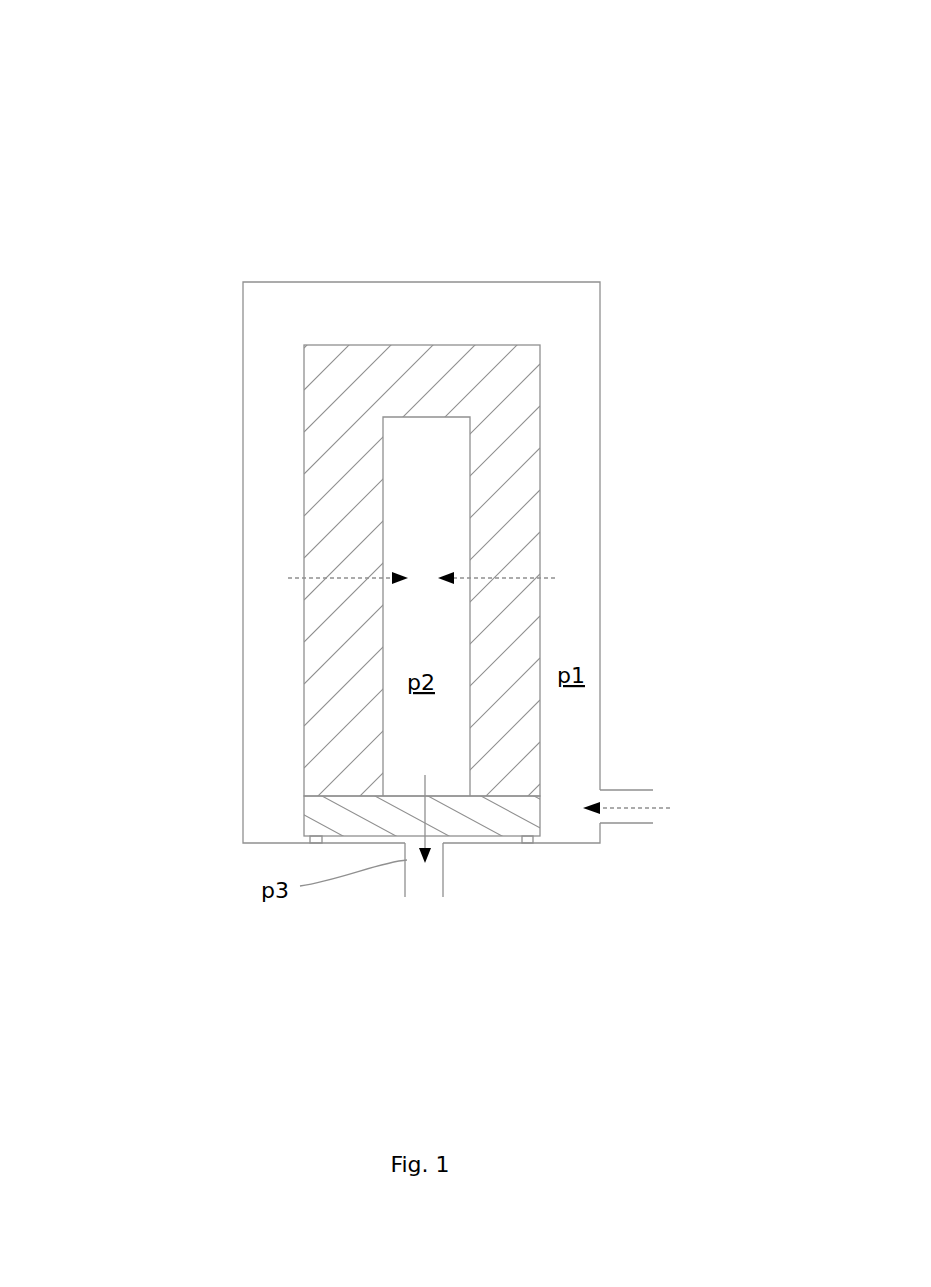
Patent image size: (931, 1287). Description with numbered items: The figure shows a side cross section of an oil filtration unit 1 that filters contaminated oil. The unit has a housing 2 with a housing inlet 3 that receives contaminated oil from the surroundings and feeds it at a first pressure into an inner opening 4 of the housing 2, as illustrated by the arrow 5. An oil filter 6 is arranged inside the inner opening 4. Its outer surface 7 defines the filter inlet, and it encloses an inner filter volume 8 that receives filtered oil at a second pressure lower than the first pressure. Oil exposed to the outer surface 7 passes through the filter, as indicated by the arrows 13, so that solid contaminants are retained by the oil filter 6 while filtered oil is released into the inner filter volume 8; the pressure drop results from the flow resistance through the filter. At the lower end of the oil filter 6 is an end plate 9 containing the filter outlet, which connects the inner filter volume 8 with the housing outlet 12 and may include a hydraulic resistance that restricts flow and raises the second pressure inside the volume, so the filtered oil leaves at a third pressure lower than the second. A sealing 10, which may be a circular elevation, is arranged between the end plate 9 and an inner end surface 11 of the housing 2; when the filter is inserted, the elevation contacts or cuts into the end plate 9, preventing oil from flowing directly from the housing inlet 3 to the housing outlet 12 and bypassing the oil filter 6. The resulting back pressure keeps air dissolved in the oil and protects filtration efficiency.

The oil filtration unit 1 is at (170, 72).
The housing 2 is at (600, 460).
The housing inlet 3 is at (647, 800).
The inner opening 4 is at (547, 318).
The arrow 5 is at (626, 808).
The oil filter 6 is at (362, 365).
The outer surface 7 is at (542, 427).
The inner filter volume 8 is at (432, 462).
The end plate 9 is at (462, 818).
The sealing 10 is at (322, 840).
The inner end surface 11 is at (255, 840).
The housing outlet 12 is at (405, 885).
The arrows 13 is at (298, 578).